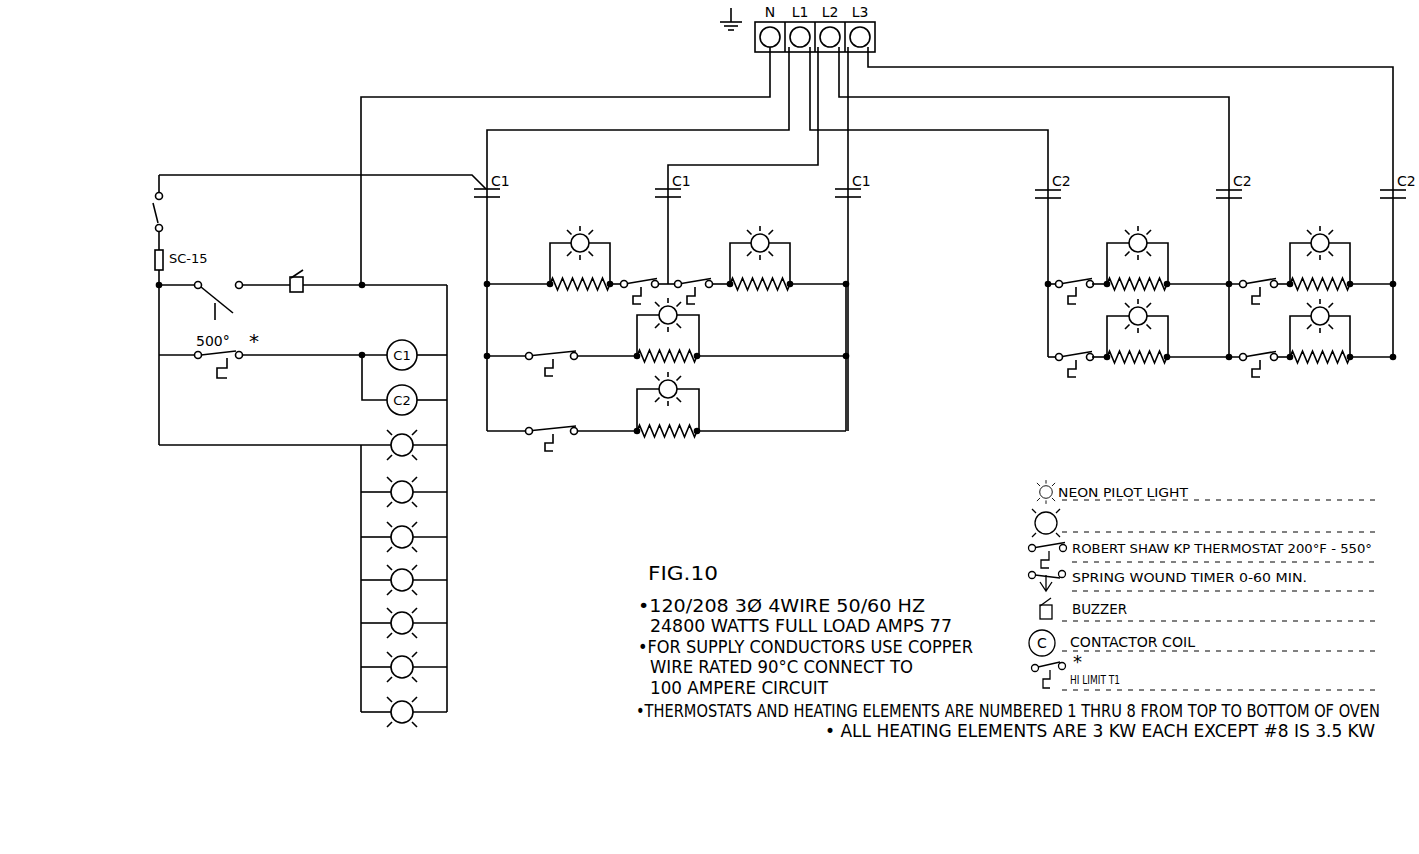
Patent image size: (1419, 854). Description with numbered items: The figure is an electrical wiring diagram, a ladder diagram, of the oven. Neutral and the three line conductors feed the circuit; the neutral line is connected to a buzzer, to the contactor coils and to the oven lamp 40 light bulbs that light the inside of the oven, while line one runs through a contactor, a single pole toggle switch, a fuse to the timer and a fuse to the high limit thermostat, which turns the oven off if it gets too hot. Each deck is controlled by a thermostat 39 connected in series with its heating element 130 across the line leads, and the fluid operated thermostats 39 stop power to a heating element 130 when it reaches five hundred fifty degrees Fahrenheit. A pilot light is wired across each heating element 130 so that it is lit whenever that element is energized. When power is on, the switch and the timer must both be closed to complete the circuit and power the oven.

The thermostat 39 is at (637, 255).
The heating element 130 is at (580, 291).
The oven lamp 40 is at (1100, 523).